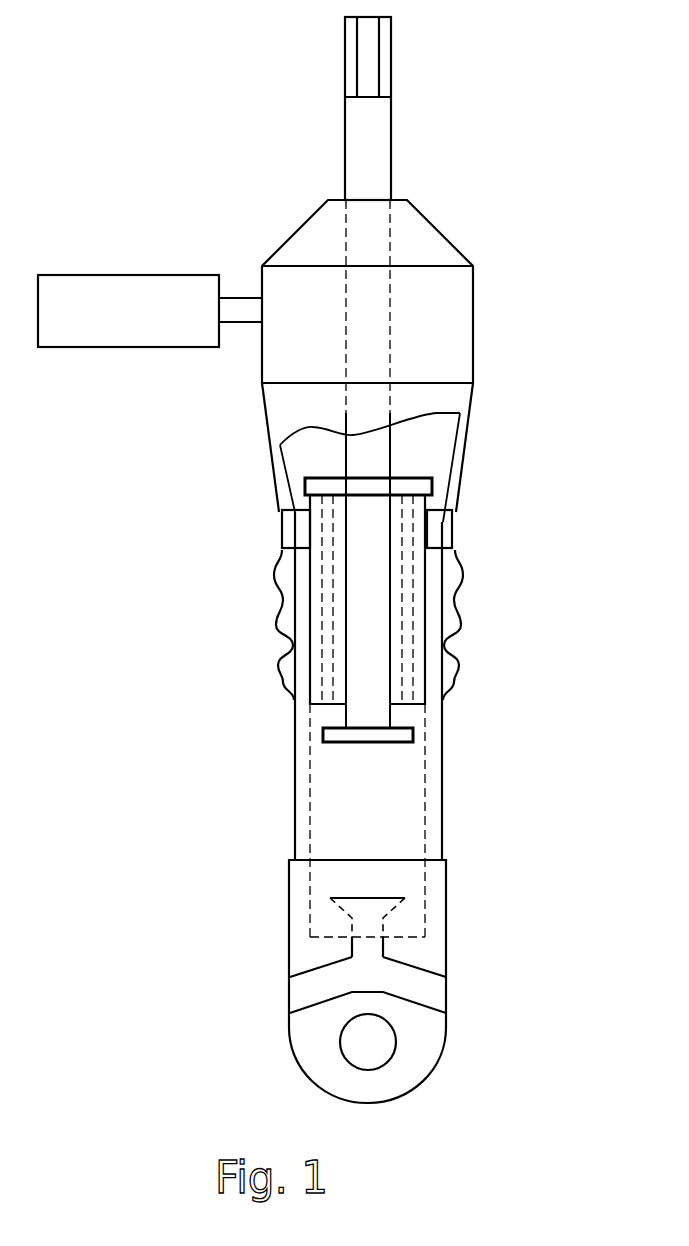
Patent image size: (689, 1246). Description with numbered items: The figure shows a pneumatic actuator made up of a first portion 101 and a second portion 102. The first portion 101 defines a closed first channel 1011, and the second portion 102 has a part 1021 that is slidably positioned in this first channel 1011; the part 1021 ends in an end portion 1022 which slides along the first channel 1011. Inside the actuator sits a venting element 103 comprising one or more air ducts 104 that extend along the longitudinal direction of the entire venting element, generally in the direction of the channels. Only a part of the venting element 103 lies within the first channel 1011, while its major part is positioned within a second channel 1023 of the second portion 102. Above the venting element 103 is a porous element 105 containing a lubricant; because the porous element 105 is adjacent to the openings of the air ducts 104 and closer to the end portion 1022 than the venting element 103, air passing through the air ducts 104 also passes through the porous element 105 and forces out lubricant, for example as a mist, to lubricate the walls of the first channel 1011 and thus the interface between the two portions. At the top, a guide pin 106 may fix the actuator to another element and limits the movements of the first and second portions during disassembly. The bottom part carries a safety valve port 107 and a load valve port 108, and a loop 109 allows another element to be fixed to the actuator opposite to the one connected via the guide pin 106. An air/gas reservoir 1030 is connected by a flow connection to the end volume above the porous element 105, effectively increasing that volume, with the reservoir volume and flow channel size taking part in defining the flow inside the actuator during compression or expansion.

The first portion 101 is at (460, 368).
The second portion 102 is at (400, 825).
The venting element 103 is at (412, 590).
The air ducts 104 is at (408, 697).
The porous element 105 is at (417, 488).
The guide pin 106 is at (378, 137).
The safety valve port 107 is at (307, 993).
The load valve port 108 is at (430, 992).
The loop 109 is at (375, 1050).
The first channel 1011 is at (303, 542).
The part 1021 is at (293, 643).
The end portion 1022 is at (303, 505).
The second channel 1023 is at (330, 825).
The air/gas reservoir 1030 is at (159, 323).